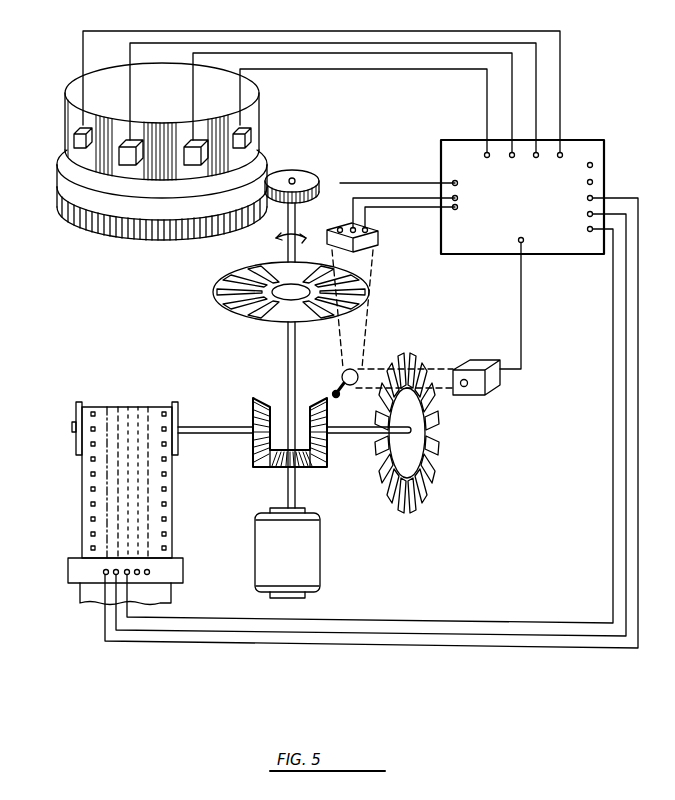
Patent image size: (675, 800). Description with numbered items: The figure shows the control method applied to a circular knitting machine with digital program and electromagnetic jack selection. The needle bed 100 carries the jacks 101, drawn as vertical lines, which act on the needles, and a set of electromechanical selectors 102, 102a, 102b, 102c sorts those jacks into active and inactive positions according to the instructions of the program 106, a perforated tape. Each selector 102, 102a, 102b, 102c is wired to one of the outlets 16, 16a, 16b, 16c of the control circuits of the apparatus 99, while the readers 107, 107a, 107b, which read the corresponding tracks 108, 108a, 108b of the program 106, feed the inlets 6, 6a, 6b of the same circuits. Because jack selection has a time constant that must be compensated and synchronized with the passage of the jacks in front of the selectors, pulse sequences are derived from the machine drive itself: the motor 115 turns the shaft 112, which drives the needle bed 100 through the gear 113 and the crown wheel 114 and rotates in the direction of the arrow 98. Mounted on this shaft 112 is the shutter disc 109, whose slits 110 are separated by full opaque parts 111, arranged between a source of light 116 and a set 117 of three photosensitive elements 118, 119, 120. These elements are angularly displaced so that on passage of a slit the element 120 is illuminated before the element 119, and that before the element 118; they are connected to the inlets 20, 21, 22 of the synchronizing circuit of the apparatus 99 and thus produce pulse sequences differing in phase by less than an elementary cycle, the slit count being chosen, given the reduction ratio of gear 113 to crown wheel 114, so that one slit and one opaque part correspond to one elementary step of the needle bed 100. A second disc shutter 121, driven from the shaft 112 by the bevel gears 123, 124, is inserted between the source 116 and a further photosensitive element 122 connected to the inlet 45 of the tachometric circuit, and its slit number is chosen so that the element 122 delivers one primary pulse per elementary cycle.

The inlet 6 is at (587, 229).
The inlet 6a is at (587, 214).
The inlet 6b is at (587, 198).
The outlet 16 is at (486, 158).
The outlet 16a is at (512, 158).
The outlet 16b is at (536, 158).
The outlet 16c is at (563, 155).
The inlet of the synchronizing circuit 20 is at (457, 209).
The inlet of the synchronizing circuit 21 is at (458, 198).
The inlet of the synchronizing circuit 22 is at (455, 180).
The inlet of the tachometric circuit 45 is at (521, 237).
The arrow 98 is at (300, 245).
The apparatus 99 is at (457, 256).
The needle bed 100 is at (70, 184).
The jacks 101 is at (162, 138).
The electromechanical selector 102 is at (256, 138).
The electromechanical selector 102a is at (200, 166).
The electromechanical selector 102b is at (122, 166).
The electromechanical selector 102c is at (70, 136).
The program 106 is at (82, 491).
The reader 107 is at (103, 572).
The reader 107a is at (114, 575).
The reader 107b is at (125, 575).
The track 108 is at (106, 406).
The track 108a is at (118, 406).
The track 108b is at (128, 406).
The shutter disc 109 is at (282, 290).
The slits 110 is at (267, 301).
The full parts 111 is at (242, 314).
The shaft 112 is at (288, 370).
The gear 113 is at (306, 178).
The crown wheel 114 is at (92, 228).
The motor 115 is at (318, 559).
The source of light 116 is at (342, 378).
The set of photosensitive elements 117 is at (370, 238).
The photosensitive element 118 is at (370, 226).
The photosensitive element 119 is at (352, 308).
The photosensitive element 120 is at (336, 226).
The second disc shutter 121 is at (436, 432).
The photosensitive element 122 is at (474, 362).
The bevel gear 123 is at (301, 464).
The bevel gear 124 is at (326, 440).